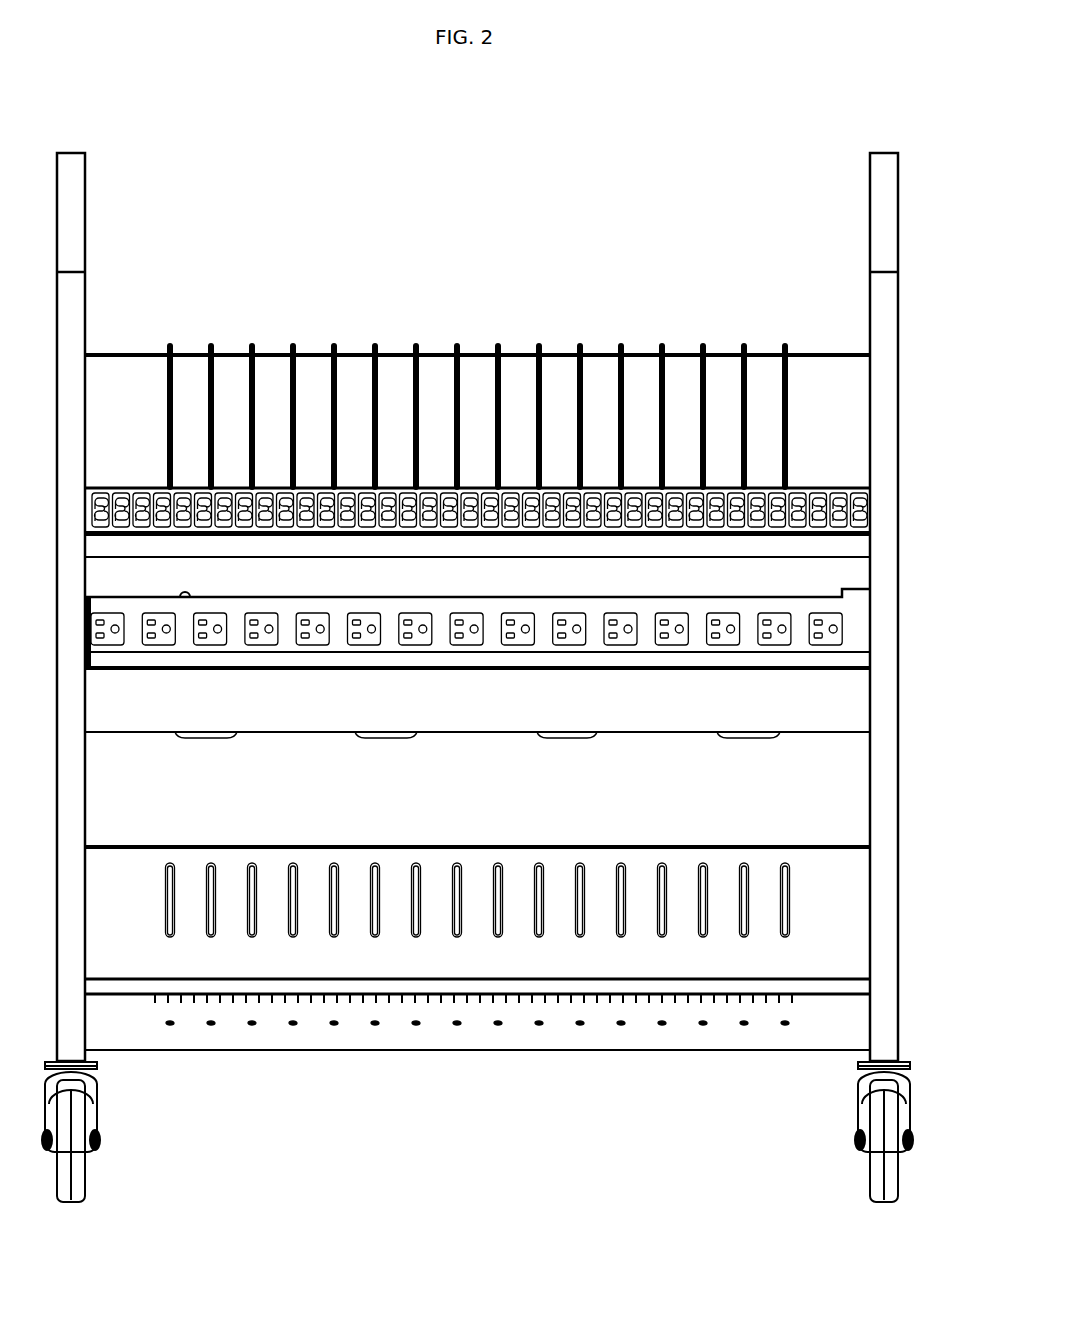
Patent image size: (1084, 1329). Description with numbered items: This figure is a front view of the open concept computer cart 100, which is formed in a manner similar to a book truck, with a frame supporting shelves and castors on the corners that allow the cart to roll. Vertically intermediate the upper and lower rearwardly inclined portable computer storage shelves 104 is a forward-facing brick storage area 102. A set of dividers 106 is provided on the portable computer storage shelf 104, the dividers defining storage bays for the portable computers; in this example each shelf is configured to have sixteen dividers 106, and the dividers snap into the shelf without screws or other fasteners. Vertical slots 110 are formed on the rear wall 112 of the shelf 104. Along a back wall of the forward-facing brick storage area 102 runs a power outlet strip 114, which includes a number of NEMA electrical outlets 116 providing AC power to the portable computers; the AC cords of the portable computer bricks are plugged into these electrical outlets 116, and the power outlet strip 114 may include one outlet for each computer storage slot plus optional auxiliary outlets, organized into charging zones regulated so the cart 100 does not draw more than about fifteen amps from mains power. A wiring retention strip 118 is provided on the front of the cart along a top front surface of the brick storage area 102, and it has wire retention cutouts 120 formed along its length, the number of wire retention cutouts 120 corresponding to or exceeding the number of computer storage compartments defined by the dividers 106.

The open concept computer cart 100 is at (812, 127).
The forward-facing brick storage area 102 is at (852, 575).
The portable computer storage shelf 104 is at (856, 403).
The dividers 106 is at (415, 346).
The vertical slots 110 is at (622, 862).
The rear wall 112 is at (190, 349).
The power outlet strip 114 is at (438, 608).
The electrical outlets 116 is at (574, 615).
The wiring retention strip 118 is at (157, 484).
The wire retention cutouts 120 is at (666, 512).